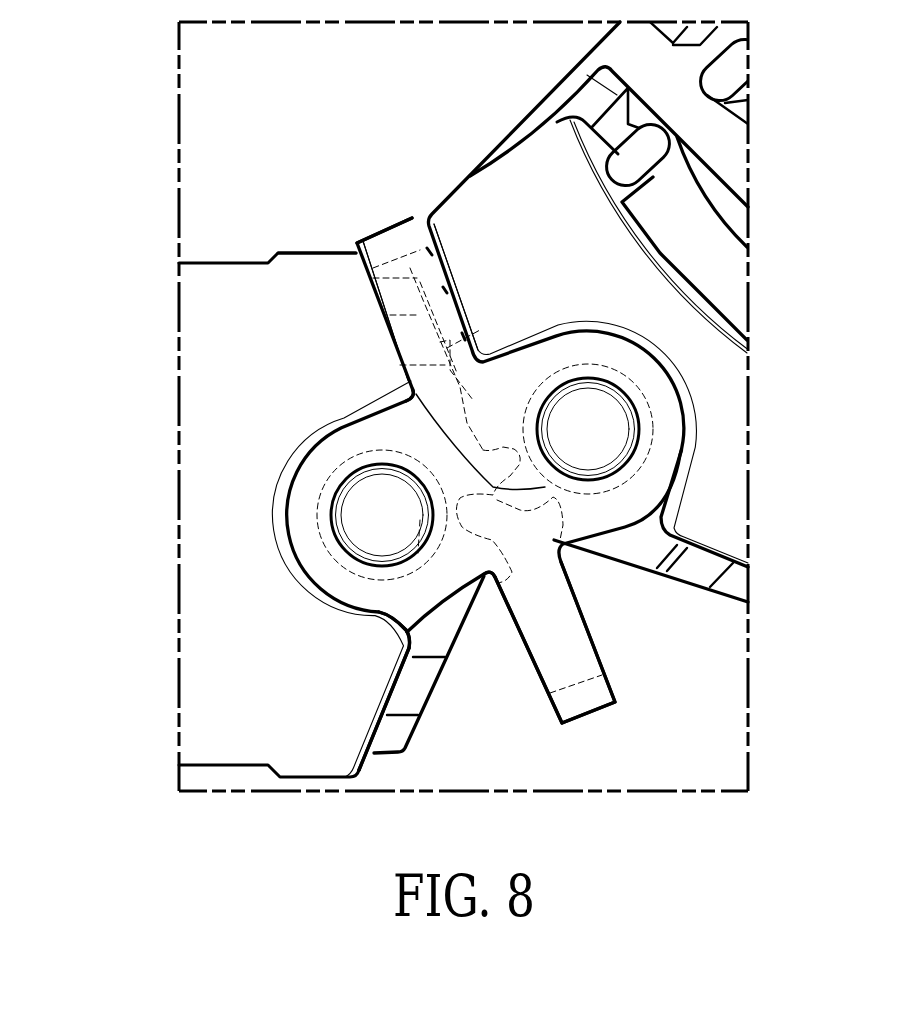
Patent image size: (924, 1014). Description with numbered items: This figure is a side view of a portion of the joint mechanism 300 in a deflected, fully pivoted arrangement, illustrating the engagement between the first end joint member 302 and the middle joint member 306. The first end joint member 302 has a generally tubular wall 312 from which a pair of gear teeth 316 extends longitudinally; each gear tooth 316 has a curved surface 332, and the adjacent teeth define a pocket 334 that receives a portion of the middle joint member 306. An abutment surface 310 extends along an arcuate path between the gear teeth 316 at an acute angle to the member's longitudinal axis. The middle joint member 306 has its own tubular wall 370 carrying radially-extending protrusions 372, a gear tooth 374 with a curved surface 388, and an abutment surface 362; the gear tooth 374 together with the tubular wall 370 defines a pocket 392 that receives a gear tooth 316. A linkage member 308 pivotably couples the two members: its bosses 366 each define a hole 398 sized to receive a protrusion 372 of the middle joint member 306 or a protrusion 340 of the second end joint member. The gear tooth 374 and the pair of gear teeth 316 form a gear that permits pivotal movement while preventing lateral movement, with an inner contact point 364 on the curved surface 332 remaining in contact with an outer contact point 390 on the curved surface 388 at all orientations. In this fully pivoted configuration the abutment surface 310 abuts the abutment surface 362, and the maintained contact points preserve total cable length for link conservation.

The joint mechanism 300 is at (457, 396).
The first end joint member 302 is at (216, 241).
The middle joint member 306 is at (425, 194).
The linkage member 308 is at (561, 61).
The abutment surface 310 is at (437, 690).
The tubular wall 312 is at (317, 250).
The gear teeth 316 is at (502, 447).
The curved surface 332 is at (490, 578).
The pocket 334 is at (402, 635).
The protrusion 340 is at (635, 434).
The abutment surface 362 is at (665, 572).
The inner contact point 364 is at (410, 395).
The boss 366 is at (303, 518).
The tubular wall 370 is at (427, 219).
The protrusion 372 is at (336, 497).
The gear tooth 374 is at (545, 525).
The curved surface 388 is at (530, 555).
The outer contact point 390 is at (545, 487).
The pocket 392 is at (542, 513).
The hole 398 is at (485, 472).